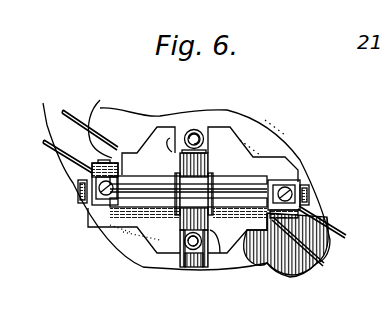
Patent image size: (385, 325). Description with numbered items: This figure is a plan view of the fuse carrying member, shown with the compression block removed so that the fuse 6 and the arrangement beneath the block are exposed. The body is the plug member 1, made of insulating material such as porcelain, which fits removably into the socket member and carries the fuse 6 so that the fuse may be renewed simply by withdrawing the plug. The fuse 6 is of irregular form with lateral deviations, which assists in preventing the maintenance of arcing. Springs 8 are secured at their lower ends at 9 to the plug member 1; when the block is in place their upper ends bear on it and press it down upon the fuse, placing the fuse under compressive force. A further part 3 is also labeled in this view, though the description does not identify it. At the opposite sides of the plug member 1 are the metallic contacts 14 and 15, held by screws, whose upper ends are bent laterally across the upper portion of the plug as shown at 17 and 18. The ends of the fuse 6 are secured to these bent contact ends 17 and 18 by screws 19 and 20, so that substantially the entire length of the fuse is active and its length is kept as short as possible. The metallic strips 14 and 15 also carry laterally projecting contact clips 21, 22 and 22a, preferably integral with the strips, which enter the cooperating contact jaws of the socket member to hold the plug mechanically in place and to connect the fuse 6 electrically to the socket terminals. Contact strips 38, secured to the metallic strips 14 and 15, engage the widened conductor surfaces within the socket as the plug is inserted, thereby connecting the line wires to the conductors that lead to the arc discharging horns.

The plug member 1 is at (263, 133).
The lower spring screw 3 is at (195, 249).
The fuse 6 is at (237, 188).
The springs 8 is at (199, 132).
The spring securing points 9 is at (172, 145).
The metallic contact 14 is at (317, 247).
The metallic contact 15 is at (105, 123).
The laterally bent upper end of contact 17 is at (298, 207).
The laterally bent upper end of contact 18 is at (92, 173).
The screw 19 is at (282, 182).
The screw 20 is at (107, 163).
The contact clip 21 is at (362, 238).
The contact clip 22 is at (325, 268).
The contact clip 22a is at (72, 112).
The contact strip 38 is at (80, 193).